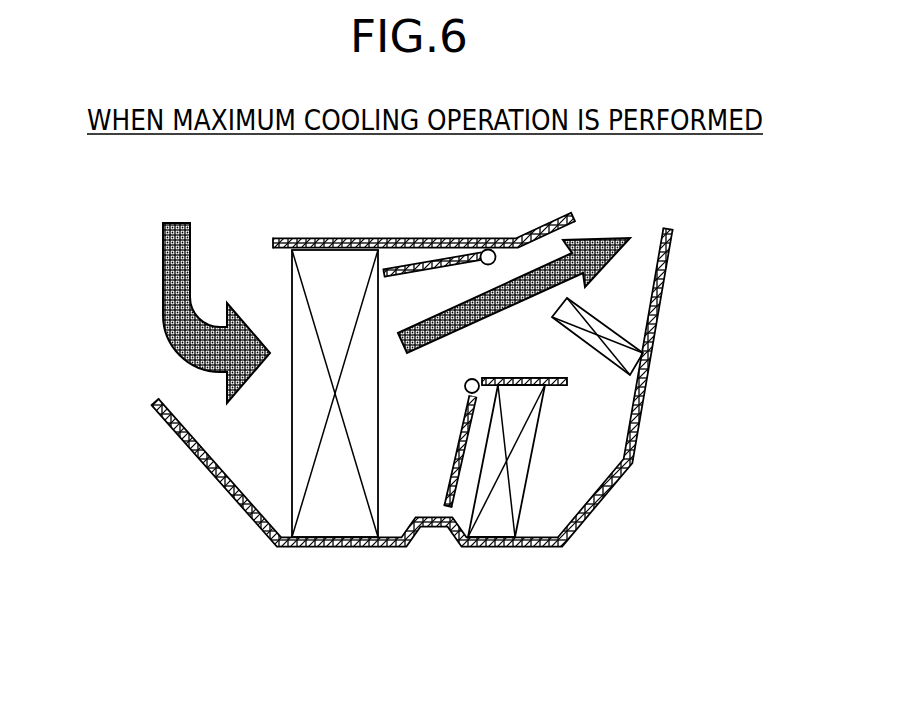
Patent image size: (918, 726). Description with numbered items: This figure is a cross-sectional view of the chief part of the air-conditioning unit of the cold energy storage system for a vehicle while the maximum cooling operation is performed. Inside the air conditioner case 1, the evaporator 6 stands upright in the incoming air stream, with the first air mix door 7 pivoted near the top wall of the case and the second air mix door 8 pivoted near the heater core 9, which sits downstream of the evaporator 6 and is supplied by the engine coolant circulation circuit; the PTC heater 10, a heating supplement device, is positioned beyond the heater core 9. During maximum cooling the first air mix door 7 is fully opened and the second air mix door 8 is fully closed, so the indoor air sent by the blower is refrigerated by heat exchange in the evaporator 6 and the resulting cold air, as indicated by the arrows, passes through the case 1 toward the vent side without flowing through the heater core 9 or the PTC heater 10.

The air conditioner case 1 is at (423, 530).
The evaporator 6 is at (288, 505).
The first air mix door 7 is at (433, 257).
The second air mix door 8 is at (455, 435).
The heater core 9 is at (527, 495).
The PTC heater 10 is at (615, 328).